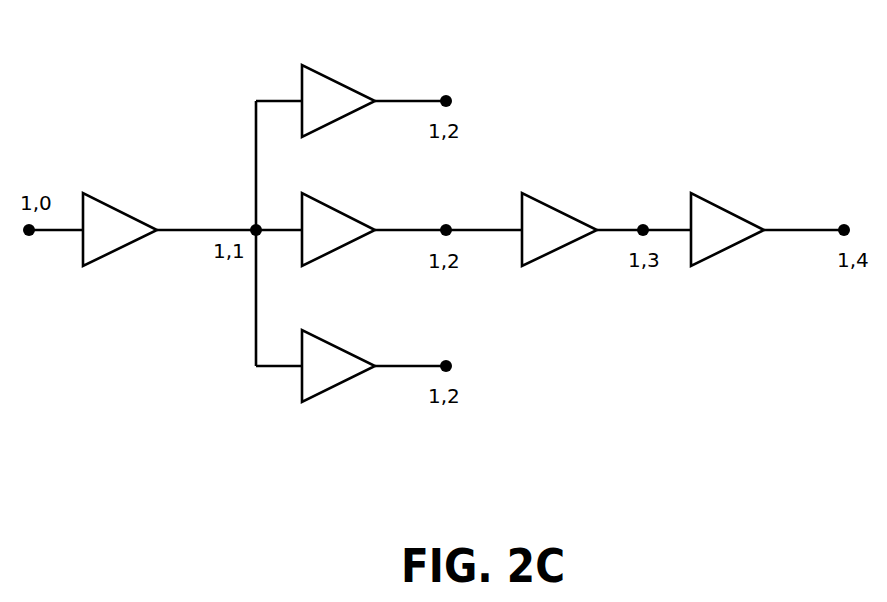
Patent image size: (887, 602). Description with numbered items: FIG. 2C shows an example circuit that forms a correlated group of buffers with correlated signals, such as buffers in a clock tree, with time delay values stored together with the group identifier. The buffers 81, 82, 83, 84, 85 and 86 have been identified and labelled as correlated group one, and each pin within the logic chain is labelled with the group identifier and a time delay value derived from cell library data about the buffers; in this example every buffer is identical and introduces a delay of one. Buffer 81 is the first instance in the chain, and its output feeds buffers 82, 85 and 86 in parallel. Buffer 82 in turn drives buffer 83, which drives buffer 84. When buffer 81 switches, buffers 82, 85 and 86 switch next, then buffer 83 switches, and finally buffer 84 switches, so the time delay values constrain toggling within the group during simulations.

The buffer 81 is at (112, 202).
The buffer 82 is at (333, 206).
The buffer 83 is at (550, 202).
The buffer 84 is at (717, 202).
The buffer 85 is at (333, 77).
The buffer 86 is at (333, 338).